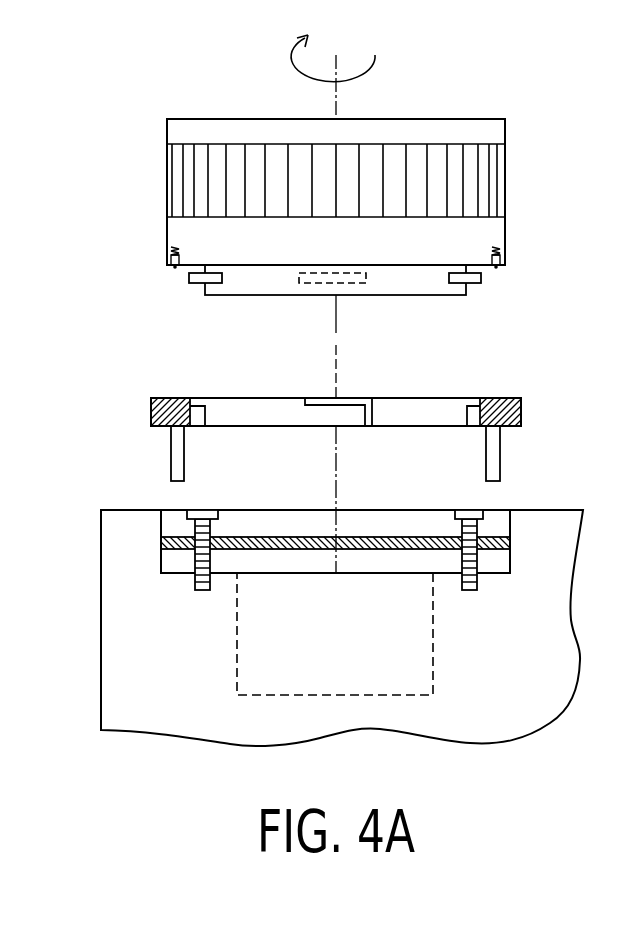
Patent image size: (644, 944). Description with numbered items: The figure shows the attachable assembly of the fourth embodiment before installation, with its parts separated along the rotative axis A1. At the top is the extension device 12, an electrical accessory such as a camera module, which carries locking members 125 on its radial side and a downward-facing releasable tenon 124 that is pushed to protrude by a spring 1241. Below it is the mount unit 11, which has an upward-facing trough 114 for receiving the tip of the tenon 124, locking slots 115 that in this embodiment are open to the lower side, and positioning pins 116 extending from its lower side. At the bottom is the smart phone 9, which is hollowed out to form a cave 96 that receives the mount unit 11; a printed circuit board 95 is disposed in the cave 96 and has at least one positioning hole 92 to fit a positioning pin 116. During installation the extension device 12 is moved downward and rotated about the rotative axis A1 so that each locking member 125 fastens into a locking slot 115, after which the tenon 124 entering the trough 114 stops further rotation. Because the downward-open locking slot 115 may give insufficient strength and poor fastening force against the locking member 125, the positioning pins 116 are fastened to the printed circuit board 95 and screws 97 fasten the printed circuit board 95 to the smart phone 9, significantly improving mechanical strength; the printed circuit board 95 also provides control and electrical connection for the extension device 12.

The rotative axis A1 is at (337, 101).
The extension device 12 is at (545, 198).
The spring 1241 is at (505, 243).
The tenon 124 is at (494, 268).
The locking member 125 is at (481, 279).
The mount unit 11 is at (397, 396).
The trough 114 is at (496, 398).
The locking slot 115 is at (456, 411).
The positioning pin 116 is at (500, 450).
The smart phone 9 is at (341, 599).
The positioning hole 92 is at (493, 545).
The printed circuit board 95 is at (412, 537).
The cave 96 is at (296, 516).
The screw 97 is at (195, 580).